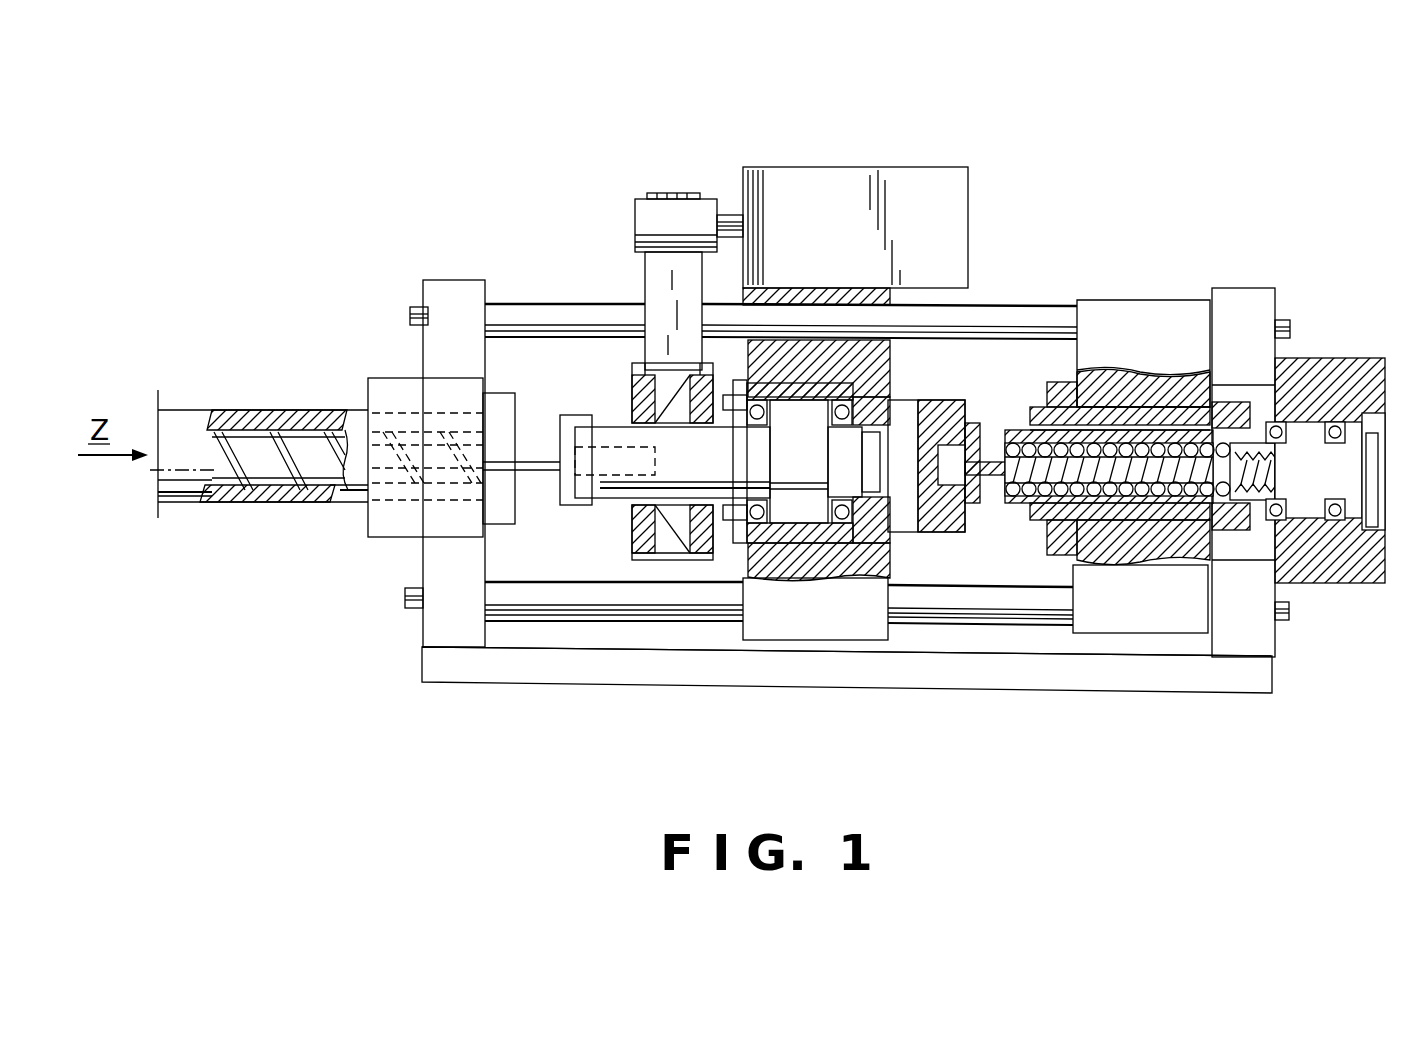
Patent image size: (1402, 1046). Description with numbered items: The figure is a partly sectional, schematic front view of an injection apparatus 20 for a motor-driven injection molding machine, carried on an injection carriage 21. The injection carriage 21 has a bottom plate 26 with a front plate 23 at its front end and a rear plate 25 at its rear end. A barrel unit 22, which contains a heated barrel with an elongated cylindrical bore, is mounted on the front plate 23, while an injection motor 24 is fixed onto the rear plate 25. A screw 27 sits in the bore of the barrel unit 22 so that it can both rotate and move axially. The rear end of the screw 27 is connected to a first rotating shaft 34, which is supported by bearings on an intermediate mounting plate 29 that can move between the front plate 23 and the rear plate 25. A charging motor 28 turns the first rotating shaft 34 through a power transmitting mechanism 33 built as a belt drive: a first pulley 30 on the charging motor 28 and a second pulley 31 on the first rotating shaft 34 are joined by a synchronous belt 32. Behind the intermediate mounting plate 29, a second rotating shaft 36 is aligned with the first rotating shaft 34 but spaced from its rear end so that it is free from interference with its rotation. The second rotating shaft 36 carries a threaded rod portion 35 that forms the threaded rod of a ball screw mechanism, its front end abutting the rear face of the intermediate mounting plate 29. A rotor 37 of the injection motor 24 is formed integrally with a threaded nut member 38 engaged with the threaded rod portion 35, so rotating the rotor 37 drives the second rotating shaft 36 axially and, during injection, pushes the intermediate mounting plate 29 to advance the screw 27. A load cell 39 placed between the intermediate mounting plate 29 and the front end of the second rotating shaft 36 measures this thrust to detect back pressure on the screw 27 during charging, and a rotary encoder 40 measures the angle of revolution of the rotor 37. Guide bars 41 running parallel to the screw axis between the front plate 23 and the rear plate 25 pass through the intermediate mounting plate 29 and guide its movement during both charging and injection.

The injection apparatus 20 is at (247, 532).
The injection carriage 21 is at (465, 690).
The barrel unit 22 is at (192, 410).
The front plate 23 is at (428, 620).
The injection motor 24 is at (1138, 623).
The rear plate 25 is at (1283, 640).
The bottom plate 26 is at (668, 667).
The screw 27 is at (250, 440).
The charging motor 28 is at (853, 167).
The intermediate mounting plate 29 is at (813, 628).
The first pulley 30 is at (640, 208).
The second pulley 31 is at (623, 532).
The synchronous belt 32 is at (652, 278).
The power transmitting mechanism 33 is at (718, 162).
The first rotating shaft 34 is at (610, 422).
The threaded rod portion 35 is at (1311, 443).
The second rotating shaft 36 is at (1130, 462).
The rotor 37 is at (1037, 515).
The threaded nut member 38 is at (1228, 525).
The load cell 39 is at (928, 517).
The rotary encoder 40 is at (1057, 385).
The guide bars 41 is at (530, 305).